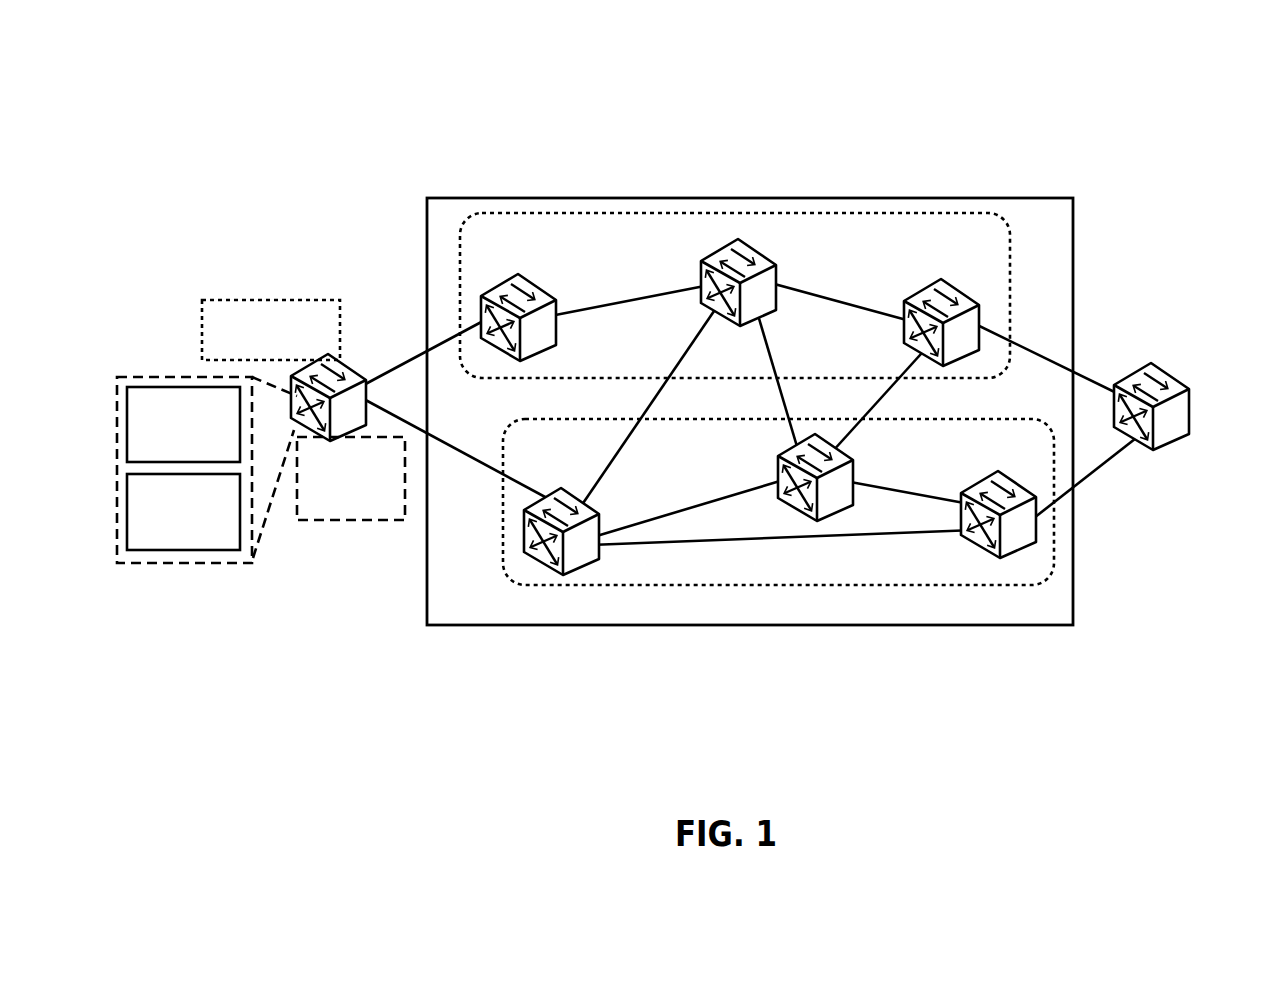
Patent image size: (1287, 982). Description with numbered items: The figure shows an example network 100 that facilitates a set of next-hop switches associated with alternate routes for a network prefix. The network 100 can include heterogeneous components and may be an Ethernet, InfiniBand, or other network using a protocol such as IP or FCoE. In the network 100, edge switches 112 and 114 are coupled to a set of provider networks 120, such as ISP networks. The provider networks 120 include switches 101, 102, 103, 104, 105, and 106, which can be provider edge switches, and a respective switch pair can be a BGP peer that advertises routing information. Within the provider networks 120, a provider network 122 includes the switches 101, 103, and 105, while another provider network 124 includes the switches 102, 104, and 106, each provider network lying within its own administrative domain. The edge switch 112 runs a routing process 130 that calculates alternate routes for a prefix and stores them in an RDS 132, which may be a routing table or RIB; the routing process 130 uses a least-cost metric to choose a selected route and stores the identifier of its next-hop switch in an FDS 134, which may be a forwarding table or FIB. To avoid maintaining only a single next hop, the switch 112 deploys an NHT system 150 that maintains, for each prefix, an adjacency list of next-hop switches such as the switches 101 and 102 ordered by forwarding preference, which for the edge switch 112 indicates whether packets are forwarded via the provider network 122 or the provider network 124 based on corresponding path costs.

The network 100 is at (1180, 162).
The switch 101 is at (538, 286).
The switch 102 is at (598, 503).
The switch 103 is at (757, 250).
The switch 104 is at (840, 447).
The switch 105 is at (904, 337).
The switch 106 is at (975, 483).
The edge switch 112 is at (341, 362).
The edge switch 114 is at (1192, 400).
The provider networks 120 is at (752, 626).
The provider network 122 is at (460, 298).
The provider network 124 is at (1055, 527).
The routing process 130 is at (337, 513).
The RDS 132 is at (170, 447).
The FDS 134 is at (170, 535).
The NHT system 150 is at (257, 352).